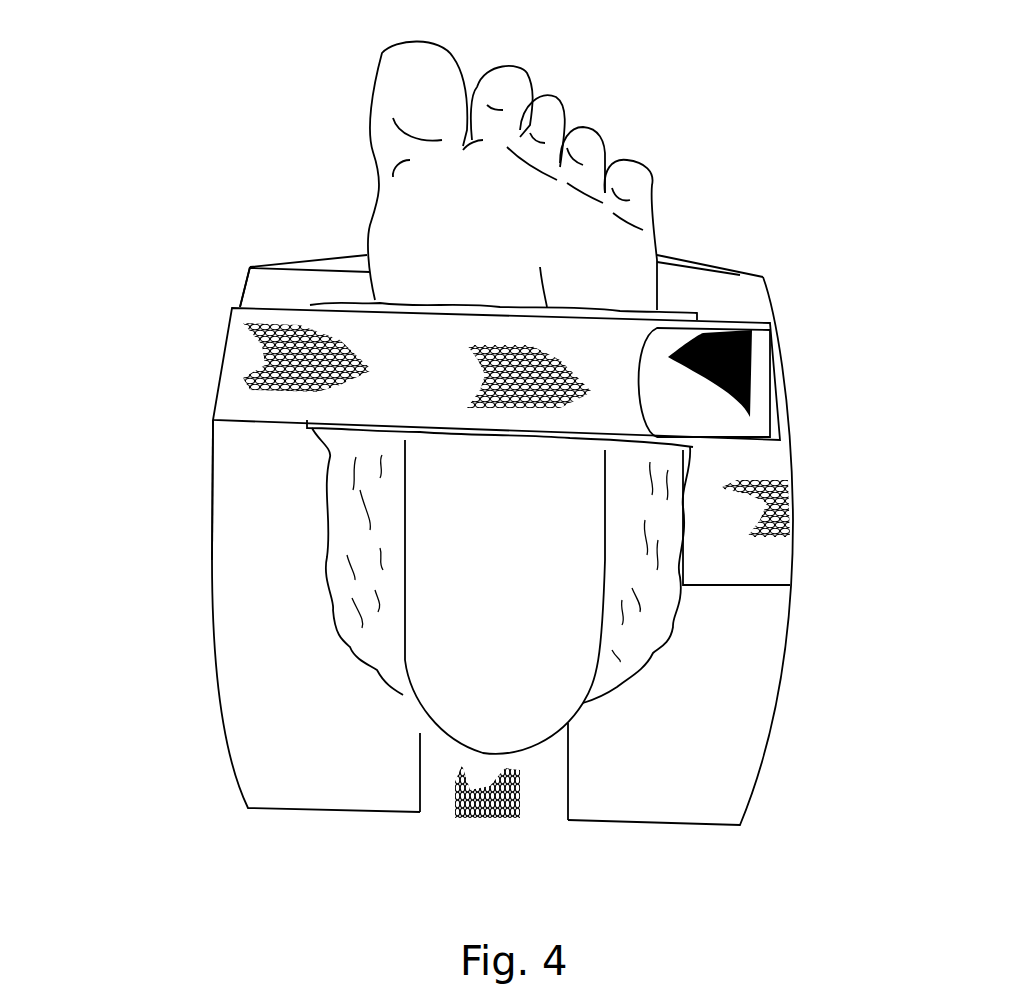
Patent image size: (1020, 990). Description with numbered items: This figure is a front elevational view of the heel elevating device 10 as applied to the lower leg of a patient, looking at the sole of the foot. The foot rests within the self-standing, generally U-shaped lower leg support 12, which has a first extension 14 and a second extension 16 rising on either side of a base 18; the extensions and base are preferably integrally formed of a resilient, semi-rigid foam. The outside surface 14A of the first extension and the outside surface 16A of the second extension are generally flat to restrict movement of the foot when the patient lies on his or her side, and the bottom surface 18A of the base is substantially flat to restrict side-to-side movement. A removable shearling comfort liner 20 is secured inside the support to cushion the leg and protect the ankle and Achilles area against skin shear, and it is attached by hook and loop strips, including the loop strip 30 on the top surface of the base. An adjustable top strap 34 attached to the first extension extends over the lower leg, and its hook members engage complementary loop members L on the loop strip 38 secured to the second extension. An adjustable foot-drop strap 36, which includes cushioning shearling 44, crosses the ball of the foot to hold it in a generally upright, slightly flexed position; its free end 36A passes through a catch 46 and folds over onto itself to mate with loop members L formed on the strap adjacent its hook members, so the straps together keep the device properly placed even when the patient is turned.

The heel elevating device 10 is at (270, 210).
The lower leg support 12 is at (205, 837).
The first extension 14 is at (227, 637).
The outside surface of first extension 14A is at (222, 730).
The second extension 16 is at (722, 678).
The outside surface of second extension 16A is at (738, 762).
The base 18 is at (363, 780).
The bottom surface of base 18A is at (640, 823).
The comfort liner 20 is at (343, 507).
The loop strip 30 is at (440, 777).
The top strap 34 is at (327, 255).
The foot-drop strap 36 is at (330, 400).
The free end of foot-drop strap 36A is at (713, 413).
The loop strip 38 is at (797, 492).
The shearling 44 is at (678, 310).
The catch 46 is at (767, 317).
The loop members L is at (260, 362).